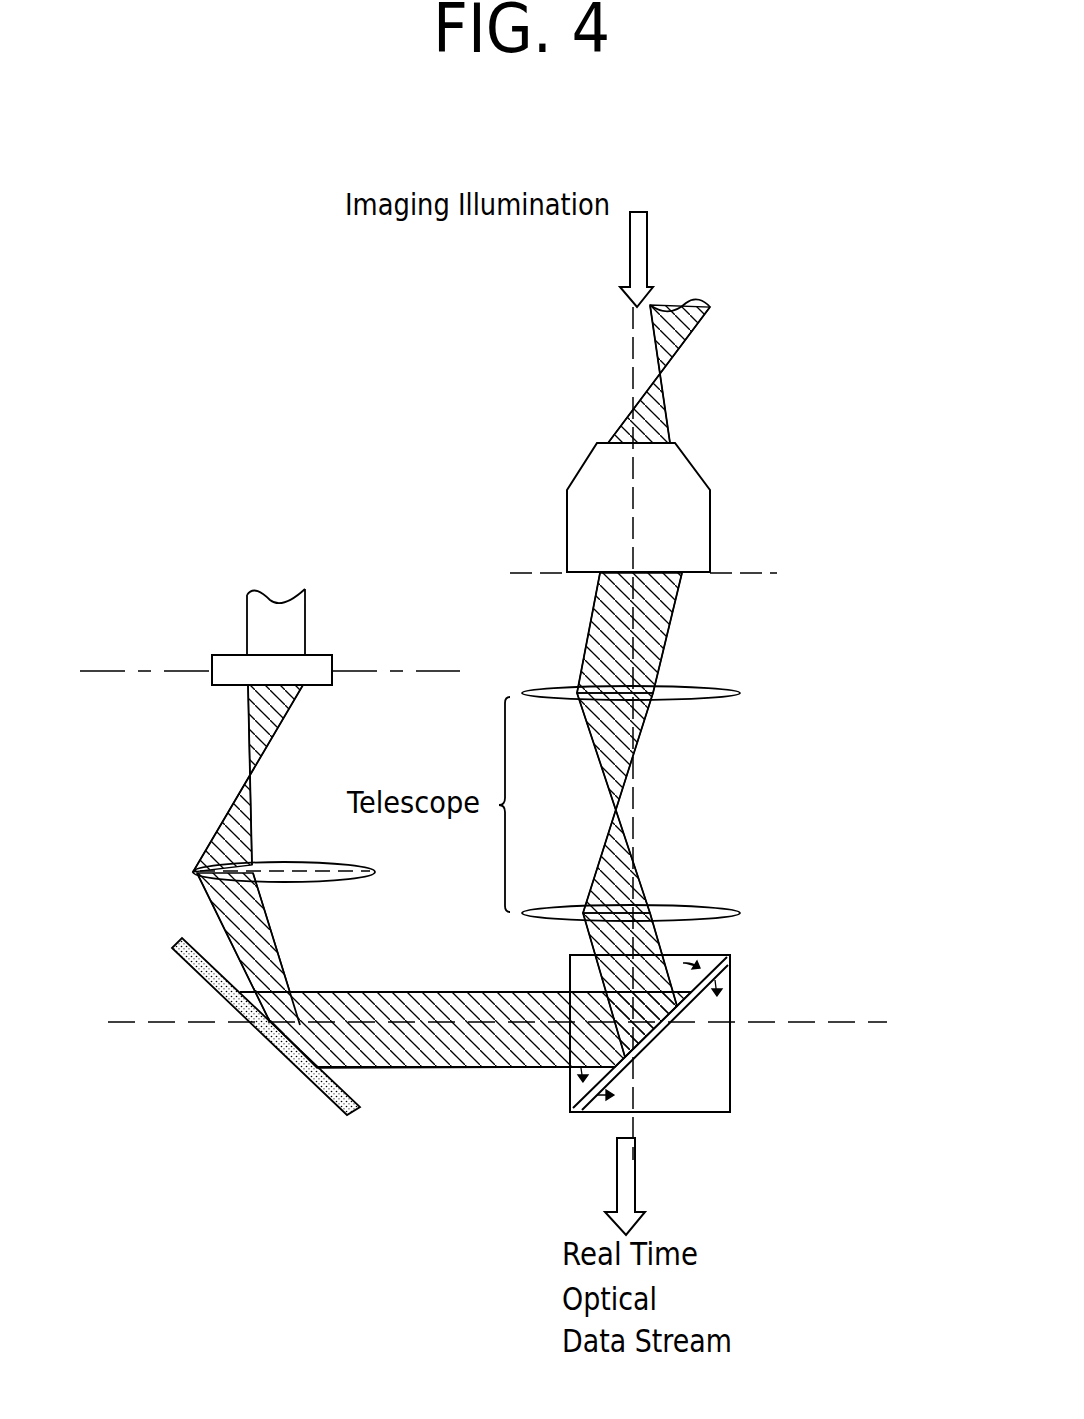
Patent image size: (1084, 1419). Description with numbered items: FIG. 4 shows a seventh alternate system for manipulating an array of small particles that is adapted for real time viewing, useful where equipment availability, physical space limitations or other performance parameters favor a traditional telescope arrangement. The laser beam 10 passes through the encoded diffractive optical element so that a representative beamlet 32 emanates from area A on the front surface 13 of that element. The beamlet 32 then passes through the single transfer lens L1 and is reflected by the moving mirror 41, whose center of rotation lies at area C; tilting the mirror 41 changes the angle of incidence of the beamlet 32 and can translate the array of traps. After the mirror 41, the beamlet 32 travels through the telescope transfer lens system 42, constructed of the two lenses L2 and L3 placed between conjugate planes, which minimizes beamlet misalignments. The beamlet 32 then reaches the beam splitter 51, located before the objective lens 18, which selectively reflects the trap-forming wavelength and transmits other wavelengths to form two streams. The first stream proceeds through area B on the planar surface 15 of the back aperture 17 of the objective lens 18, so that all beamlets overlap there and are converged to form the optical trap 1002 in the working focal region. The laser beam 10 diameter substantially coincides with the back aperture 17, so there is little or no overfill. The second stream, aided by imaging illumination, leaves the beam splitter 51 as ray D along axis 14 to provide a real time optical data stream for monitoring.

The optical trap 1002 is at (693, 300).
The objective lens 18 is at (679, 509).
The planar surface 15 is at (510, 569).
The area B is at (634, 571).
The back aperture 17 is at (697, 577).
The lens L2 is at (743, 693).
The lens L3 is at (740, 910).
The telescope system 42 is at (513, 787).
The beam splitter 51 is at (688, 1000).
The ray D is at (650, 1022).
The optical axis 14 is at (858, 1018).
The laser beam 10 is at (302, 590).
The front surface 13 is at (210, 665).
The area A is at (270, 682).
The beamlet 32 is at (285, 718).
The transfer lens L1 is at (373, 873).
The movable mirror 41 is at (200, 983).
The area C is at (300, 1013).